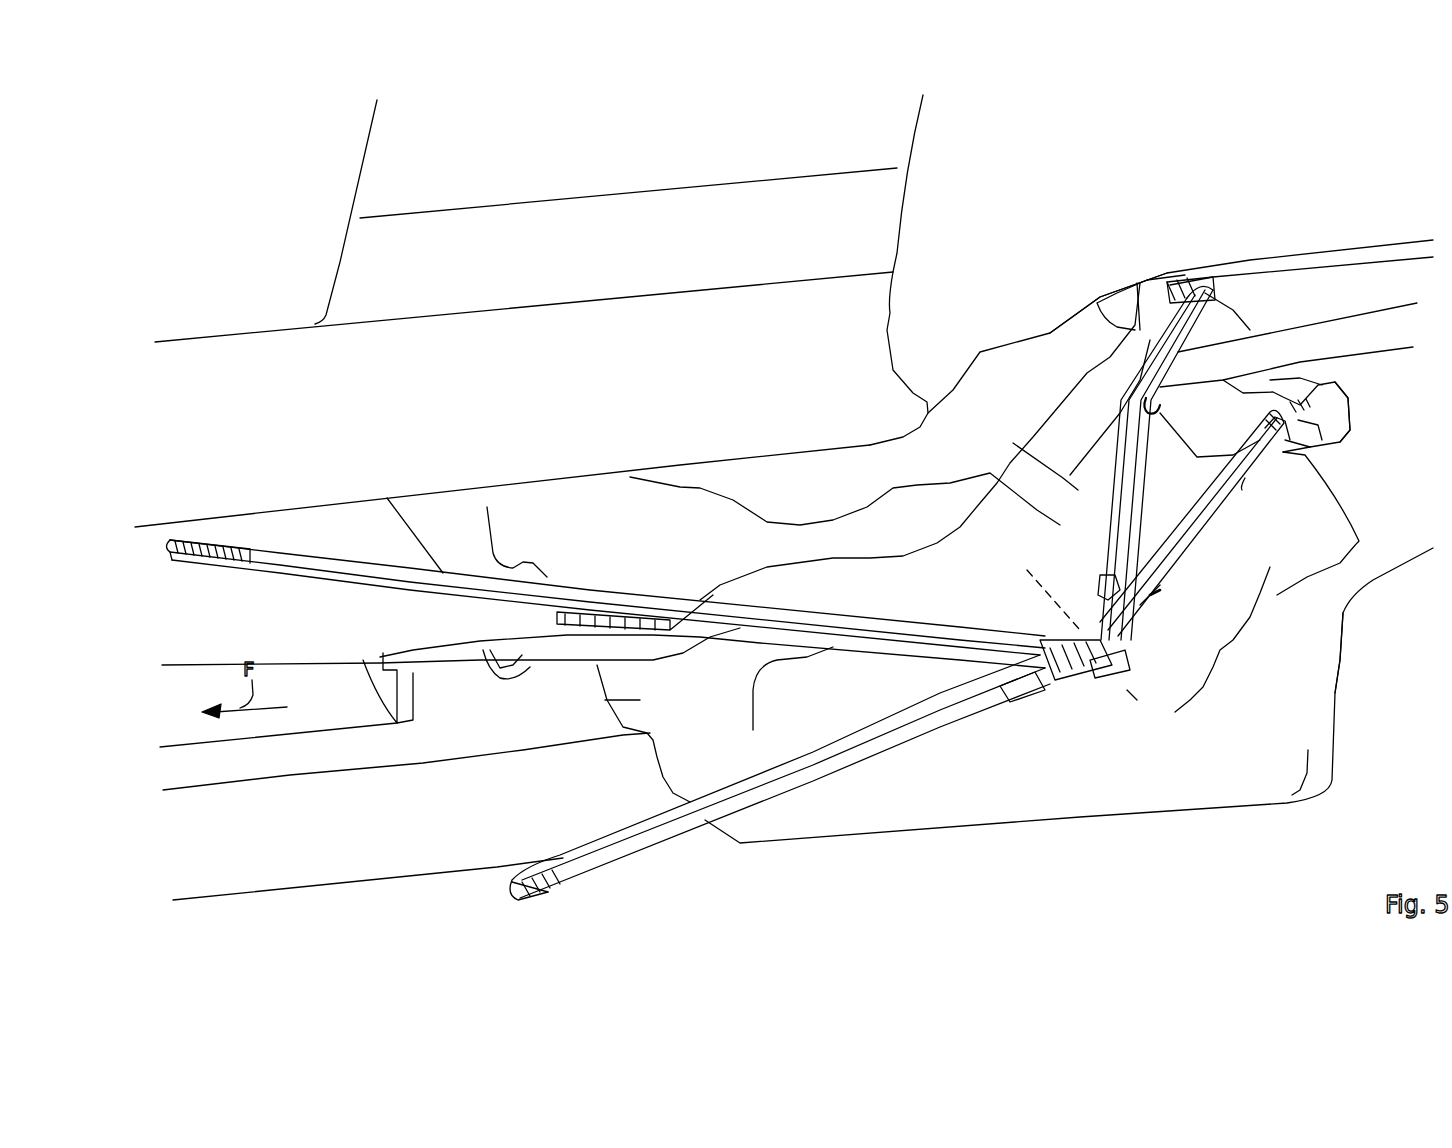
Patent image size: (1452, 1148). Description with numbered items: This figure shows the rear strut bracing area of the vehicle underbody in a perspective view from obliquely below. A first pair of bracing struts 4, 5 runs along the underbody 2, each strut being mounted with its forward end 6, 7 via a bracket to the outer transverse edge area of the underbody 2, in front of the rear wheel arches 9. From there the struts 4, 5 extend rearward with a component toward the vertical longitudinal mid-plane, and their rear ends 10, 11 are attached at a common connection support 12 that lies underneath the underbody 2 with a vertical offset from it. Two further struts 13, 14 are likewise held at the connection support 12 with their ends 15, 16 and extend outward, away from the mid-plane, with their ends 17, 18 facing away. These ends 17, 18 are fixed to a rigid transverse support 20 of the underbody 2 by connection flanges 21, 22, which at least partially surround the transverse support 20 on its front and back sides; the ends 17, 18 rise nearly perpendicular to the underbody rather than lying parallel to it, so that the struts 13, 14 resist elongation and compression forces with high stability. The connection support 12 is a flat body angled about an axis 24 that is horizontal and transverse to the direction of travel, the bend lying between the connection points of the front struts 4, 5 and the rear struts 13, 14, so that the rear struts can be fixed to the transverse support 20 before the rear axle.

The underbody 2 is at (684, 700).
The bracing strut 4 is at (900, 743).
The bracing strut 5 is at (827, 630).
The forward end 6 is at (570, 873).
The forward end 7 is at (243, 561).
The rear wheel arch 9 is at (1105, 182).
The rear end 10 is at (1012, 688).
The rear end 11 is at (970, 630).
The connection support 12 is at (1087, 650).
The further strut 13 is at (1192, 541).
The further strut 14 is at (1122, 470).
The end of further strut 15 is at (1160, 590).
The end of further strut 16 is at (1108, 570).
The end of further strut 17 is at (1242, 487).
The end of further strut 18 is at (1163, 415).
The transverse support 20 is at (1287, 383).
The connection flange 21 is at (1340, 443).
The connection flange 22 is at (1216, 283).
The axis 24 is at (1117, 676).